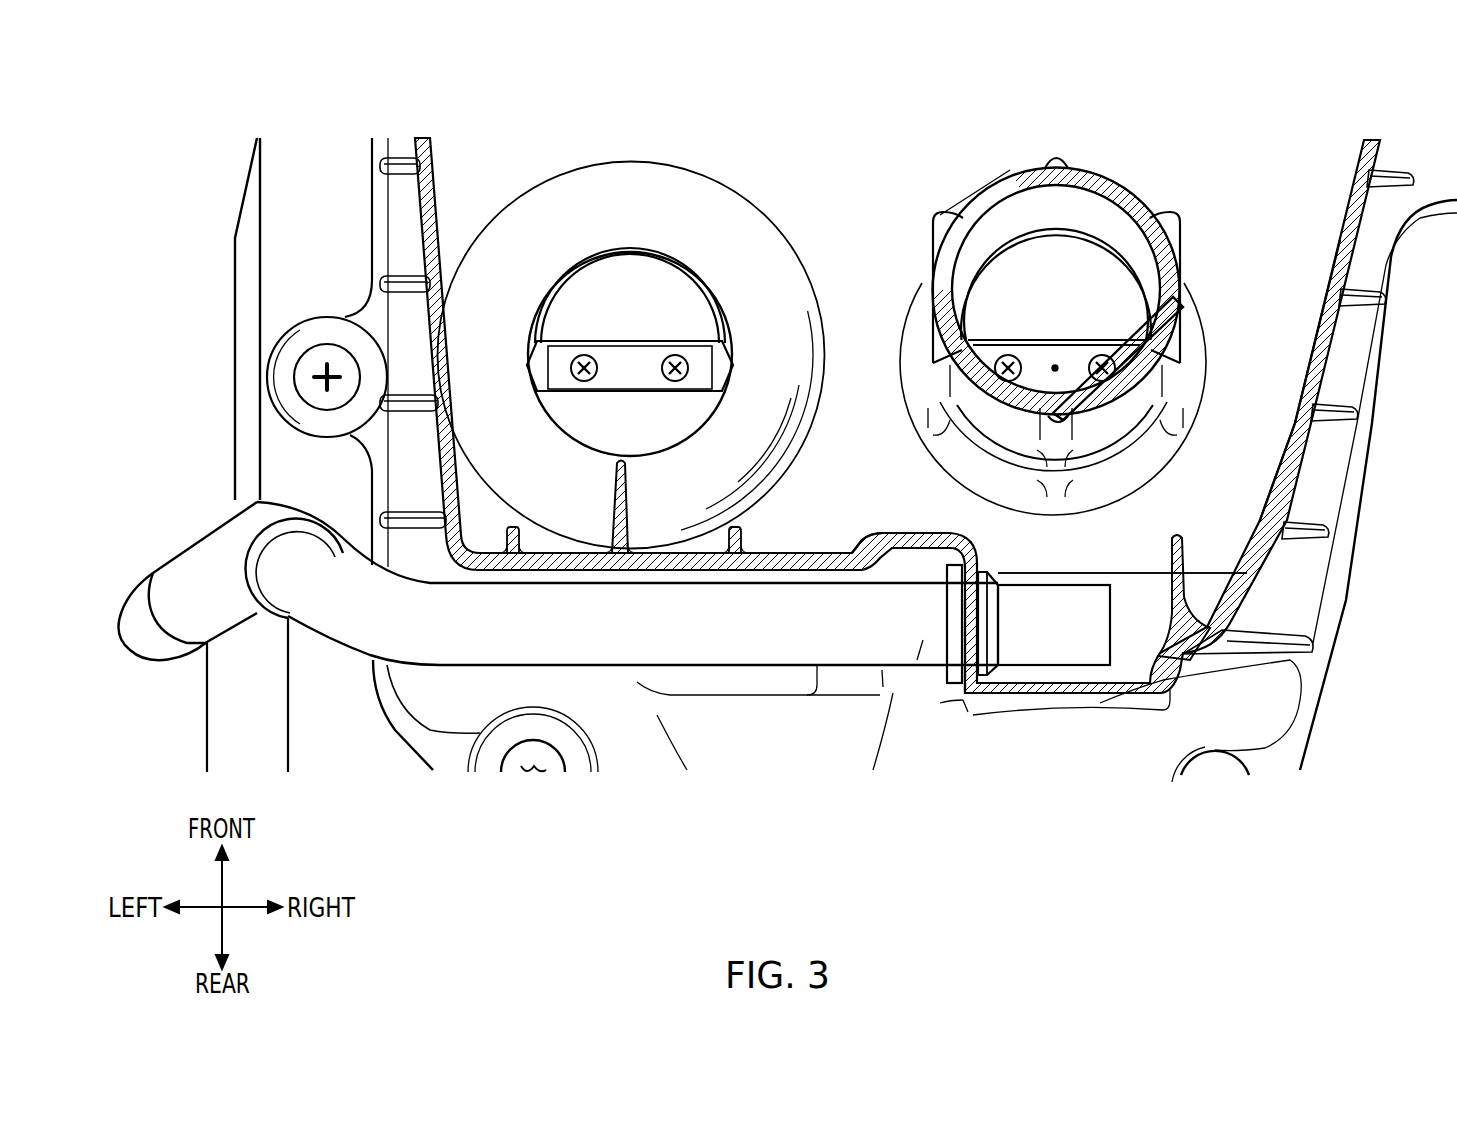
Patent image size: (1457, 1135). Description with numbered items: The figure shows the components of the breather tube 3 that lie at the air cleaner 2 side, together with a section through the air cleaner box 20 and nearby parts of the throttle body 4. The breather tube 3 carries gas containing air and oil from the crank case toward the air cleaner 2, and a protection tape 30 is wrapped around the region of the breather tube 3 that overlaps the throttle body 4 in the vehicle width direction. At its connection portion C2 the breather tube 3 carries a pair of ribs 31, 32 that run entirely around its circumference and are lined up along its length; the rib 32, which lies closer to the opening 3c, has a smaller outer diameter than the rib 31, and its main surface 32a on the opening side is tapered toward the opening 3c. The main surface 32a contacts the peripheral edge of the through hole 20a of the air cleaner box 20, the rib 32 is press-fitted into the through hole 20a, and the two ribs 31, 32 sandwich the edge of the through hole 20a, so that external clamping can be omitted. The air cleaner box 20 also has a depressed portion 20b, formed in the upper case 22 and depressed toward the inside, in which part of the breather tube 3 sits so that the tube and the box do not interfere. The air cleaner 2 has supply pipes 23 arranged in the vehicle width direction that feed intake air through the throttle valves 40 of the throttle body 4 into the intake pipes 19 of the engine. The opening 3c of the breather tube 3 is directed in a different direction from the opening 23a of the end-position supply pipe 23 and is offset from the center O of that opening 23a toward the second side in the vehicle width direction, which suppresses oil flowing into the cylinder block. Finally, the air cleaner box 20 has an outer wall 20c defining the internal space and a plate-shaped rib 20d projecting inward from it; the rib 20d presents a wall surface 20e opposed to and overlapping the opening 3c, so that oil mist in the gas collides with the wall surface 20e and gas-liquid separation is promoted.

The air cleaner 2 is at (366, 166).
The breather tube 3 is at (623, 628).
The opening 3c is at (1113, 627).
The throttle body 4 is at (228, 346).
The intake pipes 19 is at (647, 327).
The air cleaner box 20 is at (915, 460).
The through hole 20a is at (930, 565).
The depressed portion 20b is at (930, 680).
The outer wall 20c is at (1270, 556).
The plate-shaped rib 20d is at (1185, 553).
The wall surface 20e is at (1163, 551).
The upper case 22 is at (940, 703).
The supply pipes 23 is at (770, 278).
The opening 23a is at (687, 267).
The protection tape 30 is at (190, 568).
The rib 31 is at (947, 600).
The rib 32 is at (998, 627).
The main surface 32a is at (1000, 585).
The throttle valves 40 is at (593, 323).
The center O is at (1054, 364).
The connection portion C2 is at (917, 660).